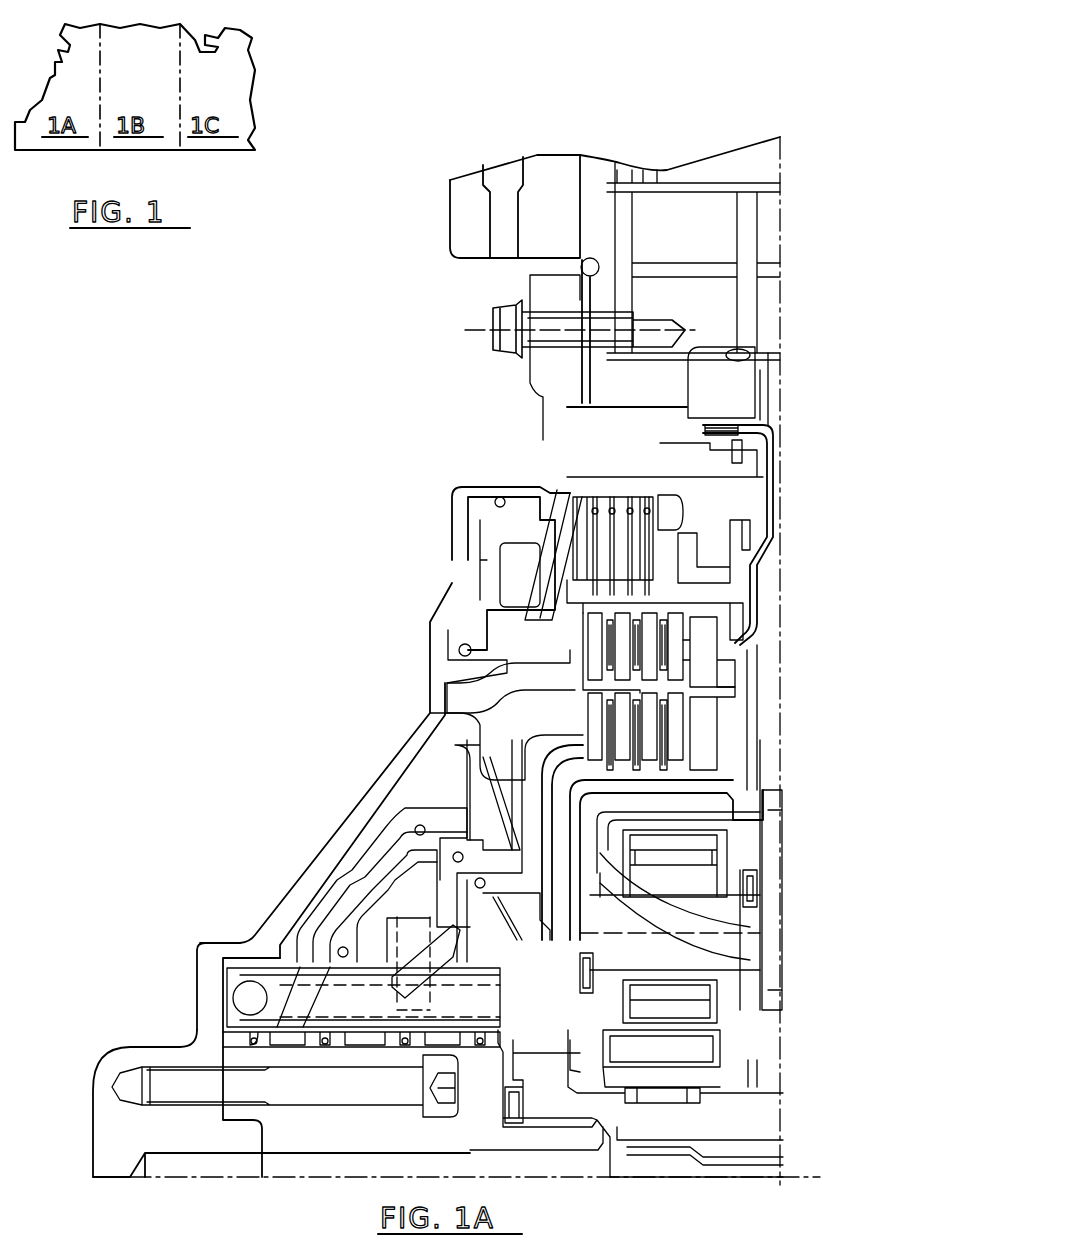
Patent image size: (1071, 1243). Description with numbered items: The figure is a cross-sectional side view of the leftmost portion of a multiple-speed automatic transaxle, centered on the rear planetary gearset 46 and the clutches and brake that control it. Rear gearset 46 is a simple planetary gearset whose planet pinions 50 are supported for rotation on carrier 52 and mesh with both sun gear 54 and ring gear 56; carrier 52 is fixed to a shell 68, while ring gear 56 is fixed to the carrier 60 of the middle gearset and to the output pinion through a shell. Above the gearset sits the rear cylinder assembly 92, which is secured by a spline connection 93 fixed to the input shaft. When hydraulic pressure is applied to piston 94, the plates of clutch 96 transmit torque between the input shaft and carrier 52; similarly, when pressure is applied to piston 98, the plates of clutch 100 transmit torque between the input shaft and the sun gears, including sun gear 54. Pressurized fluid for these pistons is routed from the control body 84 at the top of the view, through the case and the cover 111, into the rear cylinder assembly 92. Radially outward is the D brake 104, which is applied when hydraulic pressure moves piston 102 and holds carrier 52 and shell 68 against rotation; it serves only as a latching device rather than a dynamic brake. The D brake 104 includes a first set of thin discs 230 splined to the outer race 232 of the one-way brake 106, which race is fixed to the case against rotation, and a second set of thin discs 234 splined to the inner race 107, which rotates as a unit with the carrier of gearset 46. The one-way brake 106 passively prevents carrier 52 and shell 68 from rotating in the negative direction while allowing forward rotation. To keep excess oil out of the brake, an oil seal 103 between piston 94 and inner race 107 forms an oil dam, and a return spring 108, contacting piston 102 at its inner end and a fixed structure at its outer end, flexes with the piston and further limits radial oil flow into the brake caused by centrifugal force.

The control body 84 is at (612, 236).
The first set of thin discs 230 is at (647, 497).
The D brake 104 is at (535, 492).
The outer race 232 is at (732, 497).
The one-way brake 106 is at (710, 543).
The return spring 108 is at (500, 555).
The piston 102 is at (492, 575).
The inner race 107 is at (723, 593).
The second set of thin discs 234 is at (585, 600).
The clutch 96 is at (697, 638).
The oil seal 103 is at (572, 655).
The clutch 100 is at (592, 722).
The piston 94 is at (465, 752).
The piston 98 is at (490, 790).
The rear cylinder assembly 92 is at (443, 893).
The ring gear 56 is at (680, 847).
The carrier 60 is at (767, 893).
The cover 111 is at (197, 958).
The shell 68 is at (588, 932).
The carrier 52 is at (750, 950).
The planet pinion 50 is at (680, 1009).
The sun gear 54 is at (680, 1056).
The spline connection 93 is at (537, 1055).
The rear gearset 46 is at (665, 1195).